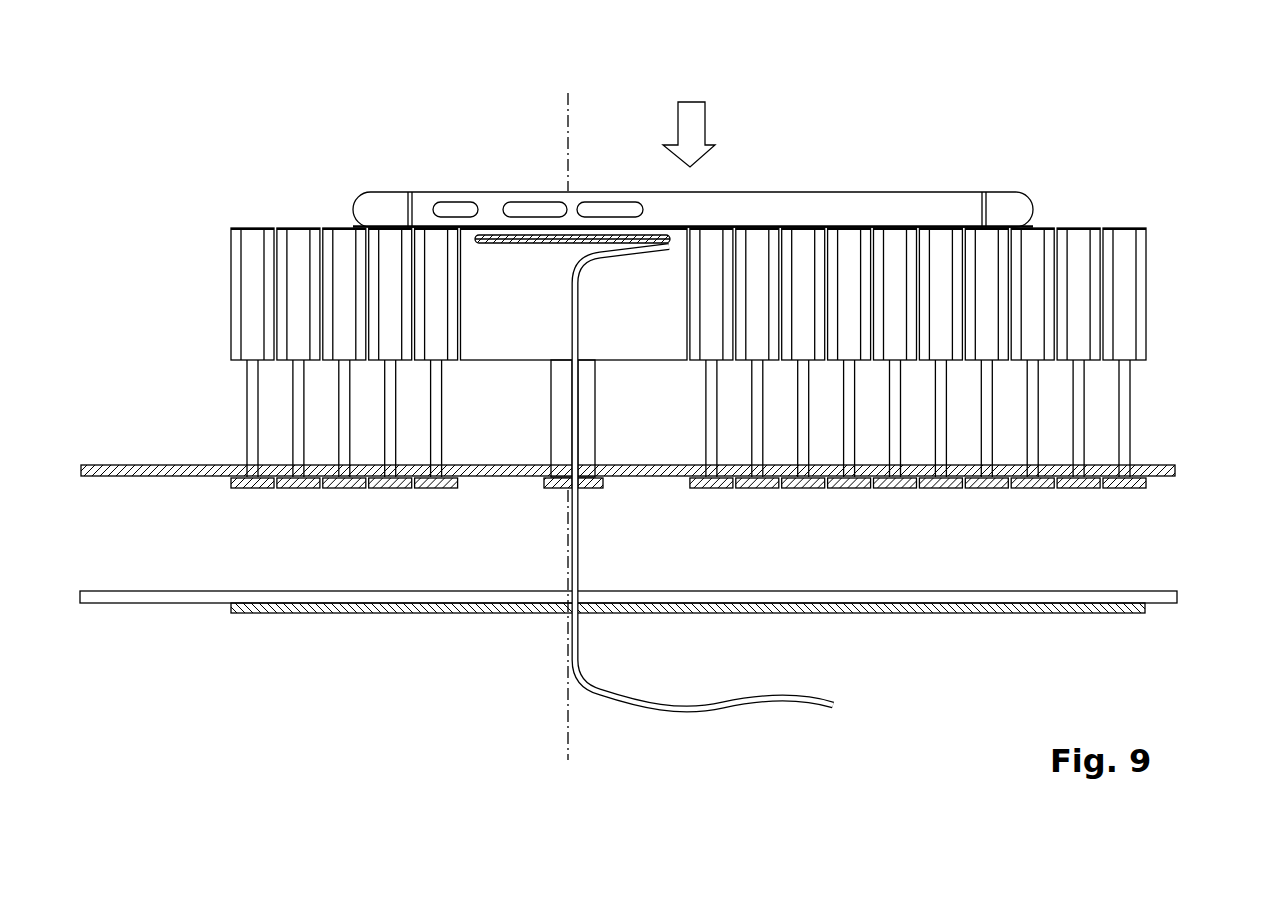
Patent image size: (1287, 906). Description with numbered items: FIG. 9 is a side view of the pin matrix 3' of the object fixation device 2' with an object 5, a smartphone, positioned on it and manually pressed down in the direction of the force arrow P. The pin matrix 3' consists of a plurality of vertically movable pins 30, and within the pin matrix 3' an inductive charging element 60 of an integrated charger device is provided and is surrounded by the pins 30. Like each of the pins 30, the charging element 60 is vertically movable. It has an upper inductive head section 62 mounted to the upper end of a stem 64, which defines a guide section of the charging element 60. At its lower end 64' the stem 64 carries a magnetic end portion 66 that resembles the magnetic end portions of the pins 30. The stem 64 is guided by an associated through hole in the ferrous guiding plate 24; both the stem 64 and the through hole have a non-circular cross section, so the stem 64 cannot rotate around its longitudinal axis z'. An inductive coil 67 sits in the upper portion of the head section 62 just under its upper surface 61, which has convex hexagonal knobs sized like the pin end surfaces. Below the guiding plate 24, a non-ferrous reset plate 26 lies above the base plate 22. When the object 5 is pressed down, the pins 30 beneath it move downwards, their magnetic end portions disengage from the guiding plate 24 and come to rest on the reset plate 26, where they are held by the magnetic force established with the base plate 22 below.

The object fixation device 2' is at (667, 278).
The pin matrix 3' is at (971, 356).
The pins 30 is at (1047, 222).
The object 5 is at (882, 168).
The force arrow P is at (707, 117).
The longitudinal axis z' is at (602, 416).
The upper surface 61 is at (679, 226).
The inductive charging element 60 is at (630, 389).
The inductive head section 62 is at (508, 364).
The stem 64 is at (496, 559).
The lower end 64' is at (612, 449).
The magnetic end portion 66 is at (550, 493).
The inductive coil 67 is at (490, 244).
The guiding plate 24 is at (1182, 474).
The reset plate 26 is at (1177, 598).
The base plate 22 is at (1137, 614).